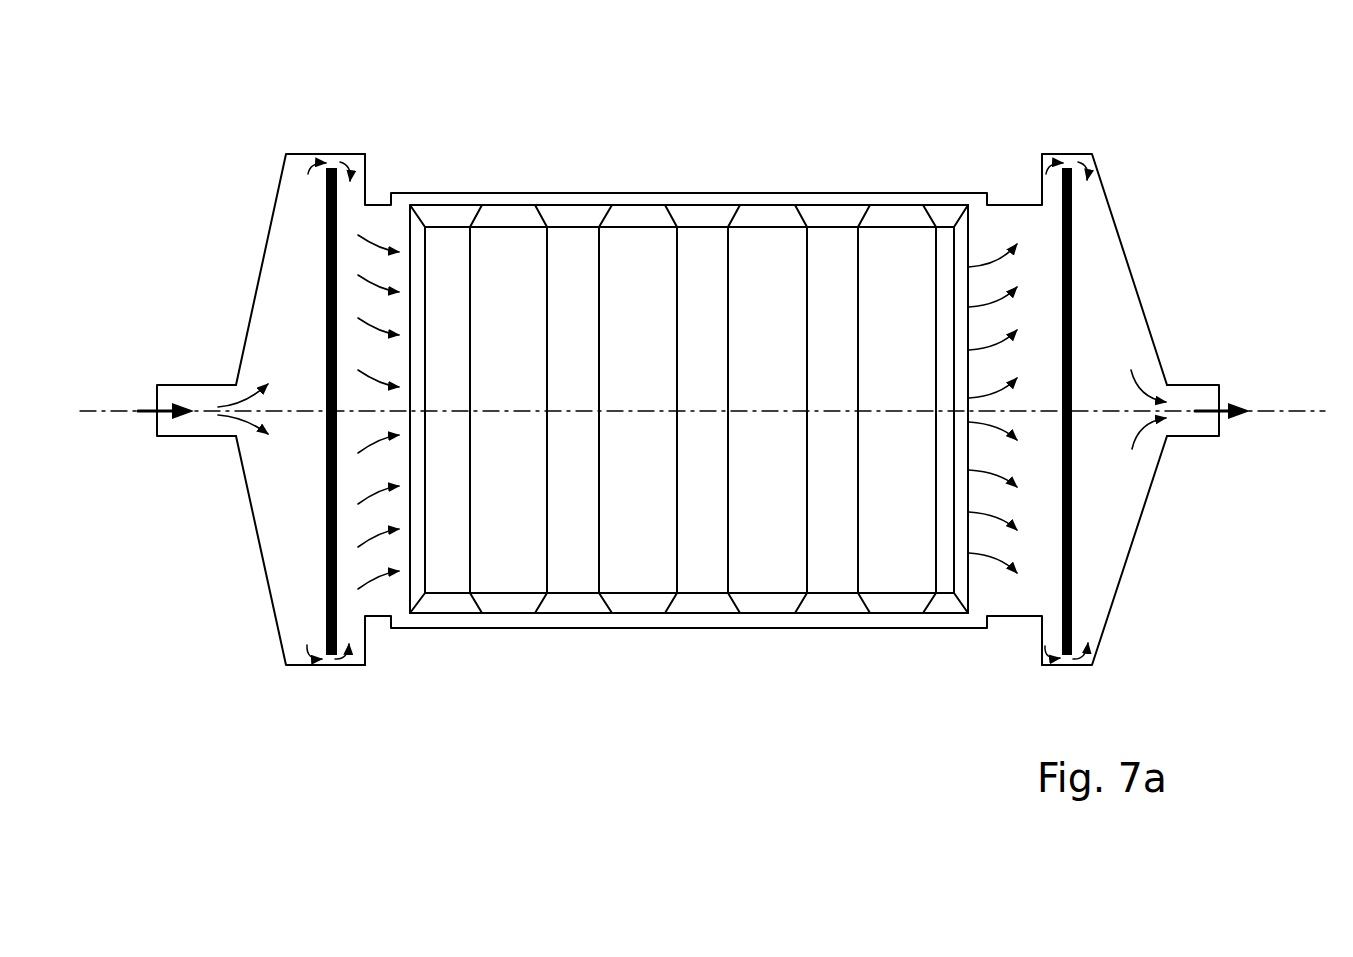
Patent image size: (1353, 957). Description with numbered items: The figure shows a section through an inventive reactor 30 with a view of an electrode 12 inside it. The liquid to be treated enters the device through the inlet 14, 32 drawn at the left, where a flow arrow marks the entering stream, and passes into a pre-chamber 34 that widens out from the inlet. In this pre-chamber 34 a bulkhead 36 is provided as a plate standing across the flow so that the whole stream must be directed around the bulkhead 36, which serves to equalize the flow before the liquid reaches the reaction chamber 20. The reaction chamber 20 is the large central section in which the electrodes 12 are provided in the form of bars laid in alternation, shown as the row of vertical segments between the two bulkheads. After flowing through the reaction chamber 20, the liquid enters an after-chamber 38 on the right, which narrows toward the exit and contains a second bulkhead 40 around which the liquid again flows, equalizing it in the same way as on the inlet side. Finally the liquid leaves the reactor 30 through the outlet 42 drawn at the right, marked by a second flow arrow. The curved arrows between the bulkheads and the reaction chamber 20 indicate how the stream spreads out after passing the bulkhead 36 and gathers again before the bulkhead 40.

The electrode 12 is at (762, 268).
The exhaust gas inlet flow 14 is at (160, 401).
The reaction chamber 20 is at (400, 600).
The reactor 30 is at (910, 140).
The inlet 32 is at (198, 385).
The pre-chamber 34 is at (287, 535).
The bulkhead 36 is at (327, 589).
The after-chamber 38 is at (1100, 547).
The bulkhead 40 is at (1072, 600).
The outlet 42 is at (1192, 385).